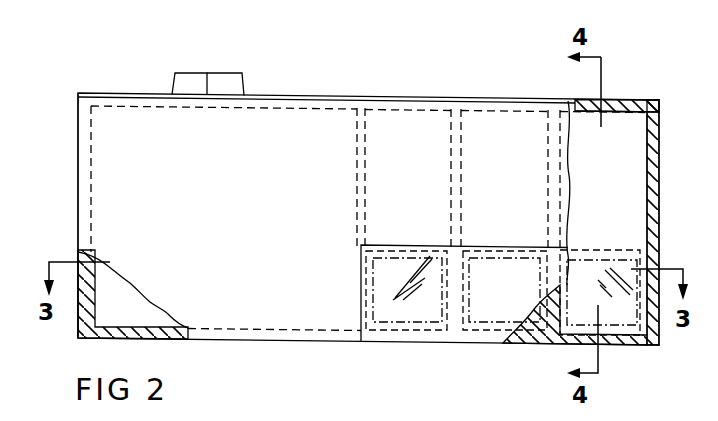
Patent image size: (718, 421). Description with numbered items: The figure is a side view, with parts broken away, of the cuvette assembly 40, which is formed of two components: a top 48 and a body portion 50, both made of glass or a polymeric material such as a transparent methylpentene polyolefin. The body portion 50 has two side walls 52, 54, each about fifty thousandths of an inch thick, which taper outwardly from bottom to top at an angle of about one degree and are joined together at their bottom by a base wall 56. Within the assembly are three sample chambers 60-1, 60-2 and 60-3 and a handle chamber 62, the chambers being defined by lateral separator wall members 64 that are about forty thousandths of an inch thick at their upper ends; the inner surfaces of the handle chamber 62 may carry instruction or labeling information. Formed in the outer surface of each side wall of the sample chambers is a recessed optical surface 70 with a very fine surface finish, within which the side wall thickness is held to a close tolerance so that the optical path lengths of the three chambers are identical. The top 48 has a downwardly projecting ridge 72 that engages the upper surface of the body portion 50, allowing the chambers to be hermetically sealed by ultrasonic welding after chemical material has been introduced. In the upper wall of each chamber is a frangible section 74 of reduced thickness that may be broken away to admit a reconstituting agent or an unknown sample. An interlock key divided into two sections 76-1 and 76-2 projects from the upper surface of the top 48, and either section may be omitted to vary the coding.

The cuvette assembly 40 is at (78, 66).
The top 48 is at (663, 96).
The body portion 50 is at (664, 179).
The side wall 52 is at (100, 148).
The side wall 54 is at (628, 205).
The base wall 56 is at (613, 343).
The sample chamber 60-1 is at (583, 125).
The sample chamber 60-2 is at (510, 126).
The sample chamber 60-3 is at (418, 126).
The handle chamber 62 is at (138, 314).
The lateral separator wall members 64 is at (357, 182).
The optical surface 70 is at (362, 267).
The downwardly projecting ridge 72 is at (662, 111).
The frangible section 74 is at (604, 103).
The interlock key section 76-1 is at (188, 77).
The interlock key section 76-2 is at (232, 78).